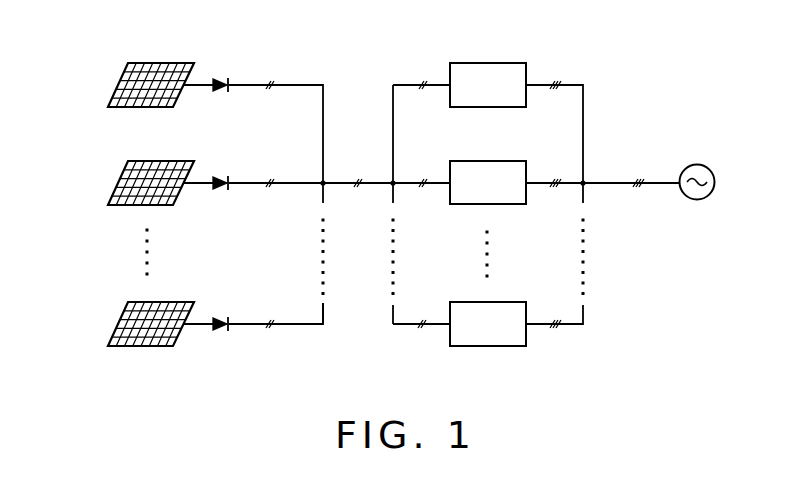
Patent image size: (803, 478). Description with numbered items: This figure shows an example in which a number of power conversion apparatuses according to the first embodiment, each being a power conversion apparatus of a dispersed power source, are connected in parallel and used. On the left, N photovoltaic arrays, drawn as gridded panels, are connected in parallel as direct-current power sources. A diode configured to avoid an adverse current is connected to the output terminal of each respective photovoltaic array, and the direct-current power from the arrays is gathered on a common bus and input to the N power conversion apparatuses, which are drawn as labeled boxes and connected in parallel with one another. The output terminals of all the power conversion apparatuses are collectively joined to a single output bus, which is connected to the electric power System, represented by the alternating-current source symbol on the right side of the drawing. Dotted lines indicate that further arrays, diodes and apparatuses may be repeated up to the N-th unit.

The electric power system System is at (697, 167).